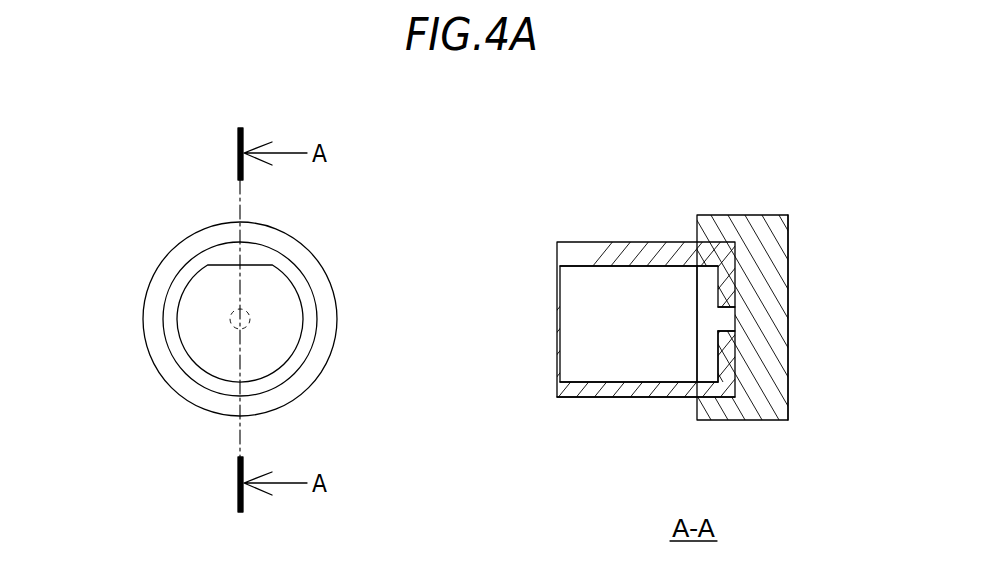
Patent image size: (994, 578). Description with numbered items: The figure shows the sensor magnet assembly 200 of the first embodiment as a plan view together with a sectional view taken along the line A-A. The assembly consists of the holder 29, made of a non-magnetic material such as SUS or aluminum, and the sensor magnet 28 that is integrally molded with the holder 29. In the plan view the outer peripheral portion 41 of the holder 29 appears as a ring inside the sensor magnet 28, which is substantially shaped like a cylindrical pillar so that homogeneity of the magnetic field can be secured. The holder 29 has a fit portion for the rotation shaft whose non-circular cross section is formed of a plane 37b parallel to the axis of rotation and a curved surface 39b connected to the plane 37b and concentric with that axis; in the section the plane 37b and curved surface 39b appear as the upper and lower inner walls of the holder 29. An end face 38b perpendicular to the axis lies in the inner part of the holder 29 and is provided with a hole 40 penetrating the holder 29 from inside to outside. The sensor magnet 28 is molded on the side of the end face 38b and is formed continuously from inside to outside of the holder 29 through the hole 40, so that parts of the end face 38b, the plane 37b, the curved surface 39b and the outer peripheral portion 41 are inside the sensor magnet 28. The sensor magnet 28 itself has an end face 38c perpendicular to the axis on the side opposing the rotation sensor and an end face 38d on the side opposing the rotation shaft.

The sensor magnet 28 is at (310, 253).
The outer peripheral portion 41 is at (168, 287).
The holder 29 is at (183, 363).
The plane 37b is at (575, 267).
The curved surface 39b is at (582, 382).
The end face 38d is at (695, 315).
The end face 38c is at (789, 263).
The hole 40 is at (723, 329).
The end face 38b is at (717, 353).
The sensor magnet assembly 200 is at (485, 541).